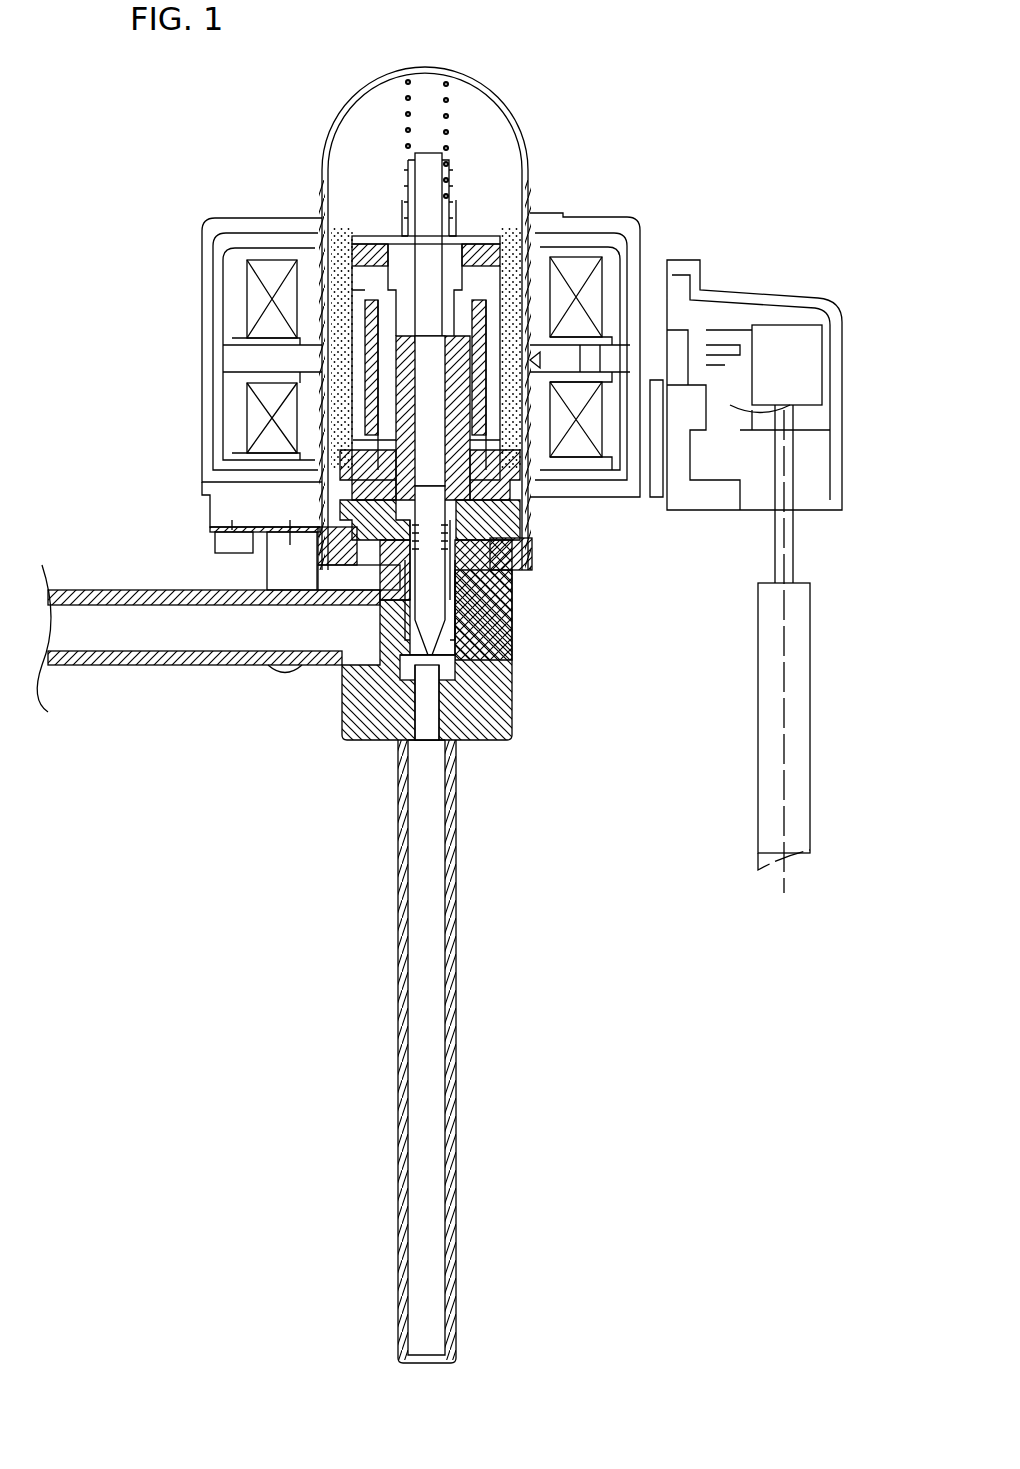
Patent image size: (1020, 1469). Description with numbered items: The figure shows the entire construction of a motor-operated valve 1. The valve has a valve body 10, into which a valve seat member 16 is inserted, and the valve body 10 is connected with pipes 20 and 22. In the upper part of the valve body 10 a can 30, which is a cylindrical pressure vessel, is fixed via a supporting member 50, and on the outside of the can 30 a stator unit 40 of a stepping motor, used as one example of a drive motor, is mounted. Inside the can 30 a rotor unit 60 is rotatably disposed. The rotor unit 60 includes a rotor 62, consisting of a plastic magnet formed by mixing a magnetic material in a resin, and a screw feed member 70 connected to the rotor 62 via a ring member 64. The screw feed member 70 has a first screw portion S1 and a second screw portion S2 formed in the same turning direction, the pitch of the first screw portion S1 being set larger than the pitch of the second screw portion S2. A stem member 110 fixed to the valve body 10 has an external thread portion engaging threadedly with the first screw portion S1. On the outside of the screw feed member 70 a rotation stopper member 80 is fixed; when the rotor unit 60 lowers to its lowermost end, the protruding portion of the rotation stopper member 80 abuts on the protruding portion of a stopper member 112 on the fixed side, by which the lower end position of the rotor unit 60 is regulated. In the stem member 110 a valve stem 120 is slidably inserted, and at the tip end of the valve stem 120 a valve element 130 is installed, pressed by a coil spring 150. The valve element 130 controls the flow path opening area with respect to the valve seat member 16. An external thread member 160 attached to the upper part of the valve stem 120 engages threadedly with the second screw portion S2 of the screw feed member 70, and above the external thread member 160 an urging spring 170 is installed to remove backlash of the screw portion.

The motor-operated valve 1 is at (578, 104).
The valve body 10 is at (503, 696).
The valve seat member 16 is at (447, 704).
The pipe 20 is at (152, 662).
The pipe 22 is at (398, 871).
The can 30 is at (345, 118).
The stator unit 40 is at (712, 284).
The supporting member 50 is at (312, 557).
The rotor unit 60 is at (518, 216).
The rotor 62 is at (337, 318).
The ring member 64 is at (332, 254).
The screw feed member 70 is at (372, 352).
The rotation stopper member 80 is at (362, 410).
The stem member 110 is at (448, 585).
The stopper member 112 is at (532, 538).
The valve stem 120 is at (466, 556).
The valve element 130 is at (342, 697).
The coil spring 150 is at (462, 600).
The external thread member 160 is at (456, 185).
The urging spring 170 is at (447, 100).
The first screw portion S1 is at (385, 398).
The second screw portion S2 is at (395, 238).